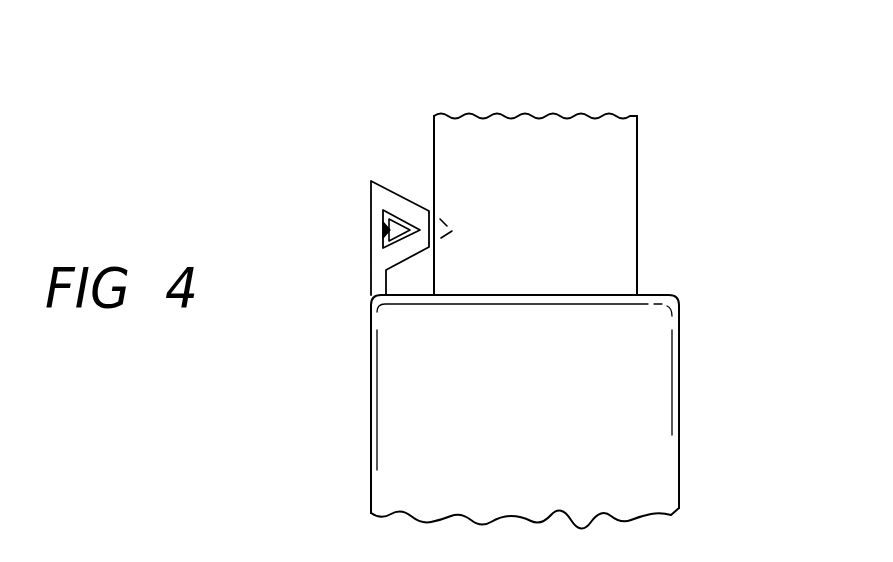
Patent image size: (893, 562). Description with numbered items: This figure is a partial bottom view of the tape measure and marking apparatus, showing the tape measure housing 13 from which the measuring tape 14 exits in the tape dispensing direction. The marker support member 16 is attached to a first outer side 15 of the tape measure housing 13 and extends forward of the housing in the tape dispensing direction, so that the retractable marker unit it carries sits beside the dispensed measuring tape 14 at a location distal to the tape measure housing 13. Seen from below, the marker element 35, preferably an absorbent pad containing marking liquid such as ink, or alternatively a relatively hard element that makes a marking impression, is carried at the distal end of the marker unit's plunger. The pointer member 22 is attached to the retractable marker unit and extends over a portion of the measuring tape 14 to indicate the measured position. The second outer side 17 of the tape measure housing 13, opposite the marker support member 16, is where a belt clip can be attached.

The tape measure housing 13 is at (598, 433).
The measuring tape 14 is at (615, 180).
The first outer side 15 is at (370, 492).
The marker support member 16 is at (368, 294).
The second outer side 17 is at (679, 477).
The pointer member 22 is at (455, 226).
The marker element 35 is at (386, 228).